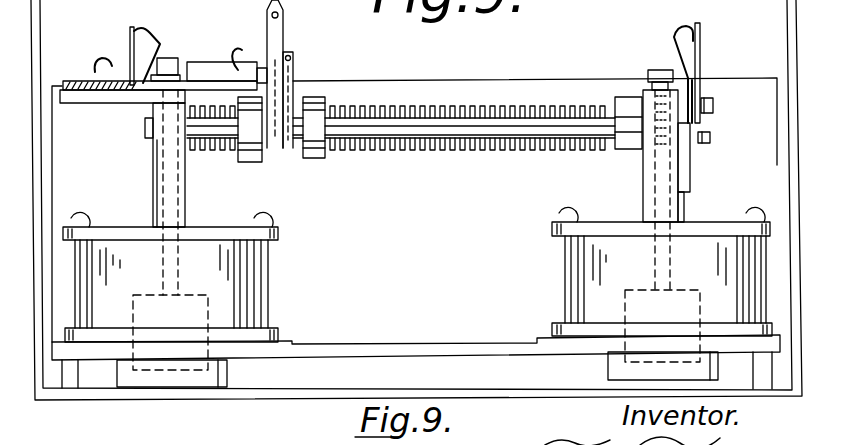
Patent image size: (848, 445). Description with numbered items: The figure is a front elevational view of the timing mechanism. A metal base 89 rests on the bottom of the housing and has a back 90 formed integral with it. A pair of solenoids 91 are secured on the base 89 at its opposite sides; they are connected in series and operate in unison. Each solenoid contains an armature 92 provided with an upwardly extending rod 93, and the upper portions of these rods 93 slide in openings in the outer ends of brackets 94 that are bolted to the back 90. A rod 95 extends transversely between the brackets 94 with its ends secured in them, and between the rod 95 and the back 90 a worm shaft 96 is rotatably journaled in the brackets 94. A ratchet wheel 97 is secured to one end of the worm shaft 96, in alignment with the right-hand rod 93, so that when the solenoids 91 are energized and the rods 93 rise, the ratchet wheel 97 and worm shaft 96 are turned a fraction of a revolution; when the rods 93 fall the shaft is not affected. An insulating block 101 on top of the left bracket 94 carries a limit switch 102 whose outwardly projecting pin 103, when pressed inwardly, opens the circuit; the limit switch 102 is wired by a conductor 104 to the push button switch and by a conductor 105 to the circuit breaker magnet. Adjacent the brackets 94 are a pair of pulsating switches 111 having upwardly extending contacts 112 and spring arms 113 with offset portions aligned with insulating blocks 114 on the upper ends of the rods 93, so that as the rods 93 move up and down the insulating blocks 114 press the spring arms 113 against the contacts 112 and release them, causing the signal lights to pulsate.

The base 89 is at (410, 350).
The back 90 is at (535, 121).
The solenoids 91 is at (237, 273).
The armatures 92 is at (150, 310).
The rods 93 is at (172, 208).
The brackets 94 is at (157, 165).
The rod 95 is at (463, 150).
The worm shaft 96 is at (438, 104).
The ratchet wheel 97 is at (647, 83).
The insulating block 101 is at (103, 97).
The limit switch 102 is at (203, 68).
The pin 103 is at (264, 72).
The conductor 104 is at (100, 57).
The conductor 105 is at (238, 45).
The pulsating switches 111 is at (87, 80).
The contacts 112 is at (133, 27).
The spring arms 113 is at (676, 12).
The insulating blocks 114 is at (173, 70).